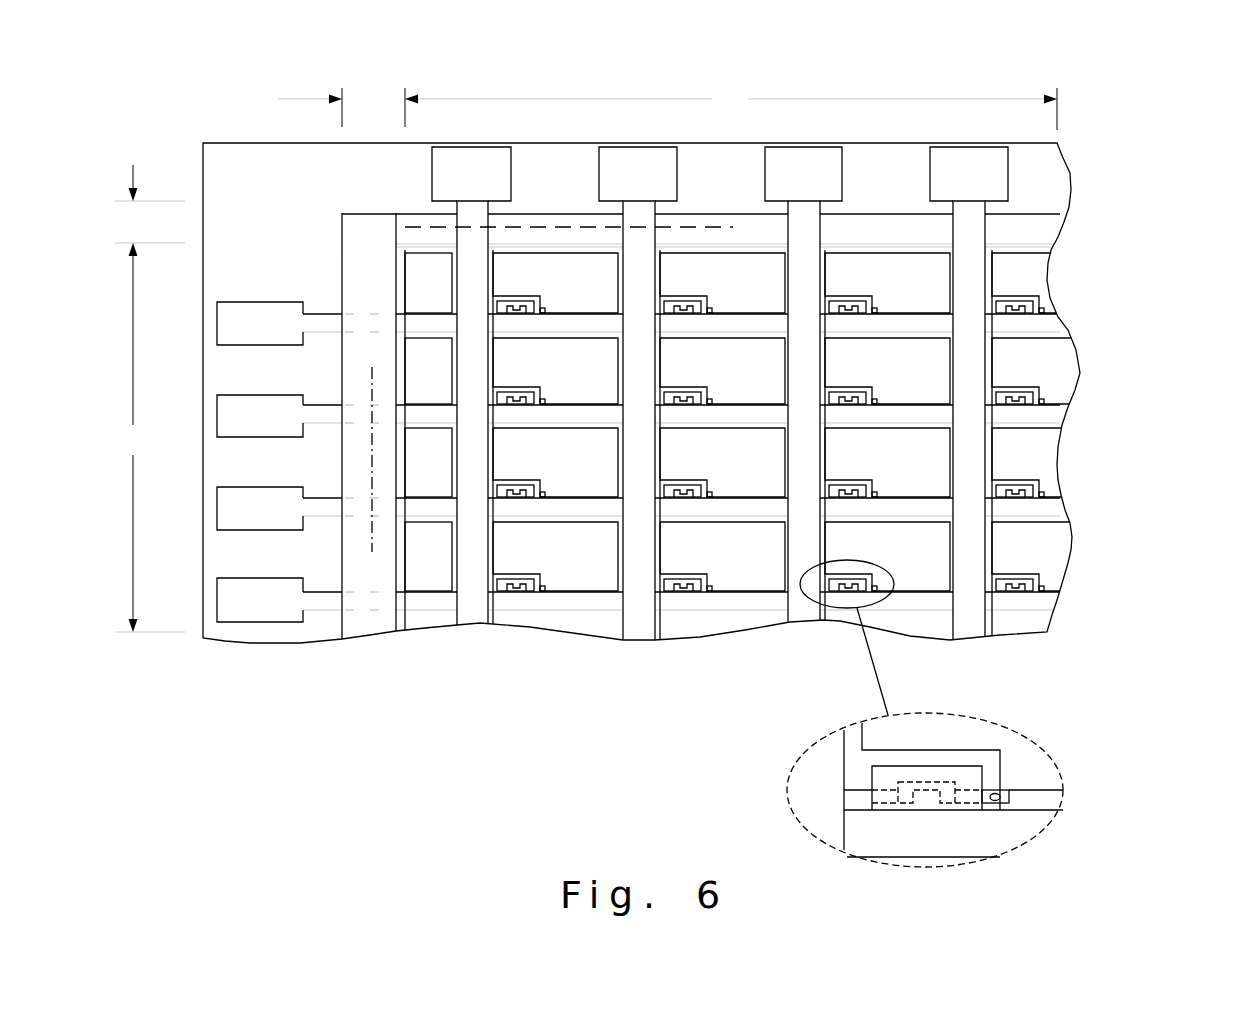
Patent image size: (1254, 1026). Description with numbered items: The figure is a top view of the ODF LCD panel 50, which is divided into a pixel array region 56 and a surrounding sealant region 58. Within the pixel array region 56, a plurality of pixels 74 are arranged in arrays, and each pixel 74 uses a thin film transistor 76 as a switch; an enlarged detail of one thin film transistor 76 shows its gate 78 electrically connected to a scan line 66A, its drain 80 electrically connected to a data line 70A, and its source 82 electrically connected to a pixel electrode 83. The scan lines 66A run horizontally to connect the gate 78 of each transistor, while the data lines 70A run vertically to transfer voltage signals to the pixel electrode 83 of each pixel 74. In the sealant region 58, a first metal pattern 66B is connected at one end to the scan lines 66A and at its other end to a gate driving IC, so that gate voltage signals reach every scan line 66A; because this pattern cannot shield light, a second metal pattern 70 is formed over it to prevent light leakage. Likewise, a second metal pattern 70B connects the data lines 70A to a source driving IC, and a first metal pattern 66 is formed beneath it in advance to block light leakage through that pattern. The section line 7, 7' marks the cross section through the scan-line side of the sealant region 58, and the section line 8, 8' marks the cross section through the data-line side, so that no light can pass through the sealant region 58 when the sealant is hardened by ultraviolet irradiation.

The ODF LCD panel 50 is at (992, 52).
The pixel array region 56 is at (586, 358).
The sealant region 58 is at (260, 164).
The section line 7-7' 7 is at (315, 456).
The section line 7- 7' is at (314, 547).
The section line 8-8' 8 is at (567, 192).
The section line 8- 8' is at (717, 192).
The first metal pattern 66 is at (1028, 232).
The scan line 66A is at (1040, 507).
The first metal pattern 66B is at (327, 600).
The second metal pattern 70 is at (367, 625).
The data line 70A is at (645, 628).
The second metal pattern 70B is at (967, 208).
The pixel 74 is at (808, 491).
The thin film transistor 76 is at (876, 713).
The gate 78 is at (923, 783).
The drain 80 is at (880, 797).
The source 82 is at (1000, 795).
The pixel electrode 83 is at (1040, 347).